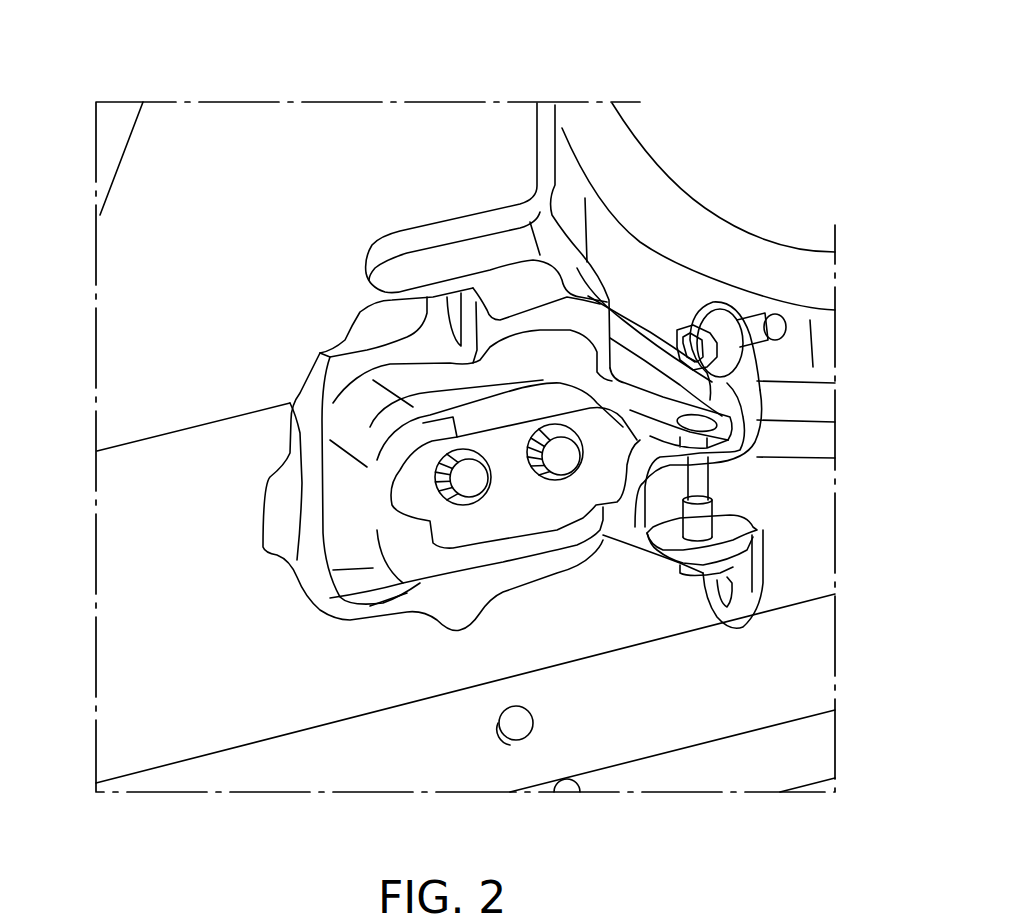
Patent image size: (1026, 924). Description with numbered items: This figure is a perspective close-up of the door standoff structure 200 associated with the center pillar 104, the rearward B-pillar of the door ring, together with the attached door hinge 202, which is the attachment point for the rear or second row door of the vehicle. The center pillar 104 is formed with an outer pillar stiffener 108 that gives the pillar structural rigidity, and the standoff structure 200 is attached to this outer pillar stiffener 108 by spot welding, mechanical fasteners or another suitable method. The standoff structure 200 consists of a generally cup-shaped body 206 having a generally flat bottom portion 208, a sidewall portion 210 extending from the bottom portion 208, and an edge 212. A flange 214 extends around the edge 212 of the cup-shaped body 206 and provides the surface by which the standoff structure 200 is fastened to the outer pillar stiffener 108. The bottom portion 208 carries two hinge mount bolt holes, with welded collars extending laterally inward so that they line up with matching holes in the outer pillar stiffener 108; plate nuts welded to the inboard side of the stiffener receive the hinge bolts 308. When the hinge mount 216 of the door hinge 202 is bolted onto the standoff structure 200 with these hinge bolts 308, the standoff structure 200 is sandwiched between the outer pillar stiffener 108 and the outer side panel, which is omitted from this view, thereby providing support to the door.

The center pillar 104 is at (560, 450).
The outer pillar stiffener 108 is at (173, 385).
The standoff structure 200 is at (316, 350).
The door hinge 202 is at (729, 487).
The cup-shaped body 206 is at (370, 585).
The bottom portion 208 is at (420, 533).
The sidewall portion 210 is at (353, 533).
The edge 212 is at (303, 433).
The flange 214 is at (383, 328).
The hinge mount 216 is at (523, 490).
The hinge bolts 308 is at (640, 178).